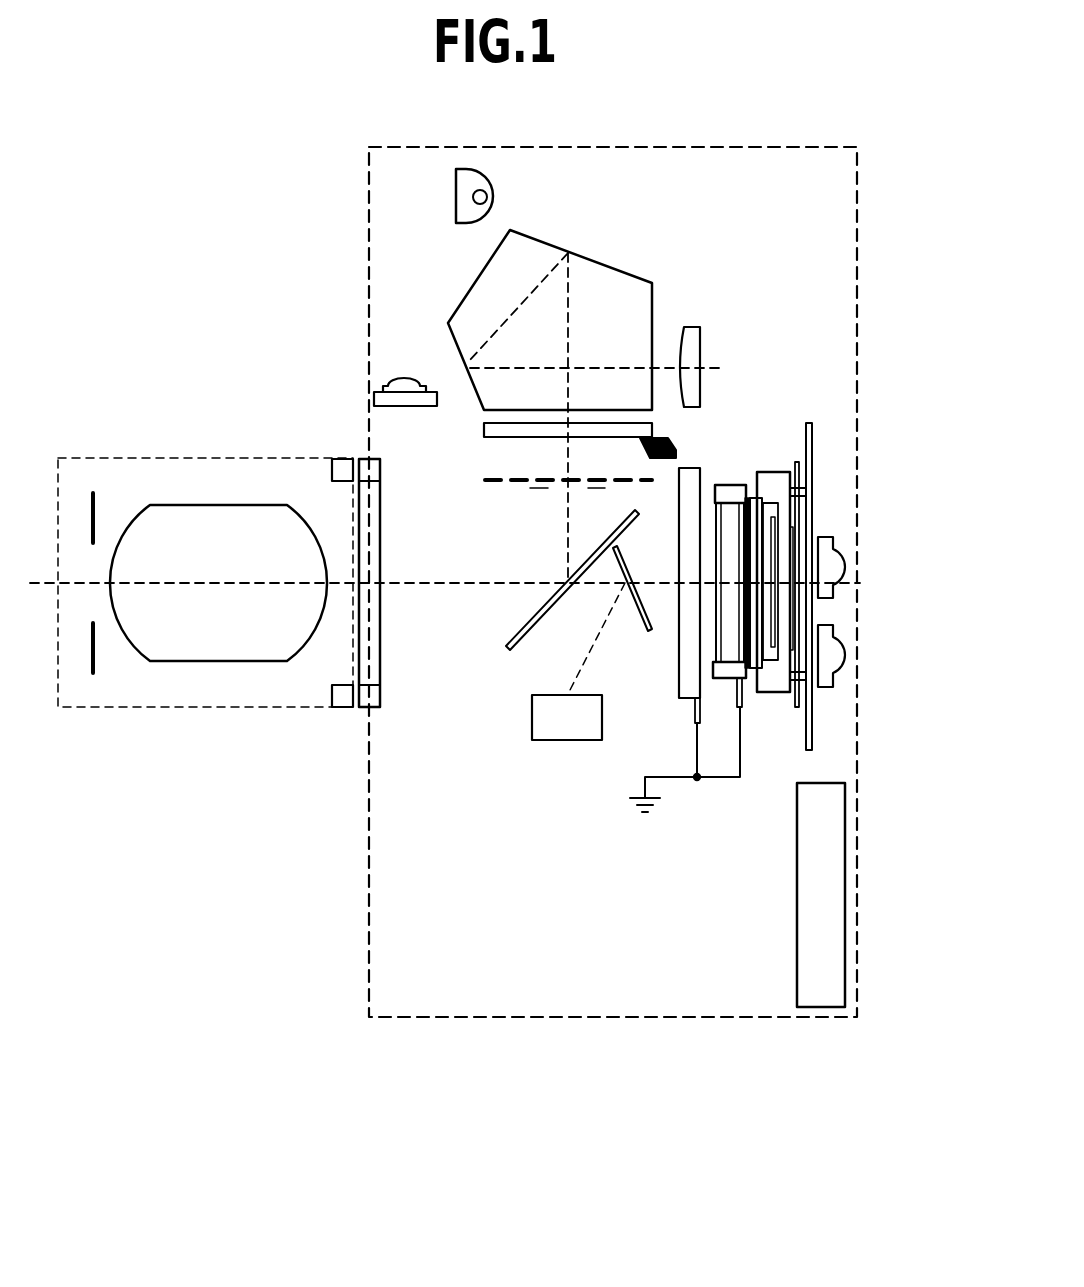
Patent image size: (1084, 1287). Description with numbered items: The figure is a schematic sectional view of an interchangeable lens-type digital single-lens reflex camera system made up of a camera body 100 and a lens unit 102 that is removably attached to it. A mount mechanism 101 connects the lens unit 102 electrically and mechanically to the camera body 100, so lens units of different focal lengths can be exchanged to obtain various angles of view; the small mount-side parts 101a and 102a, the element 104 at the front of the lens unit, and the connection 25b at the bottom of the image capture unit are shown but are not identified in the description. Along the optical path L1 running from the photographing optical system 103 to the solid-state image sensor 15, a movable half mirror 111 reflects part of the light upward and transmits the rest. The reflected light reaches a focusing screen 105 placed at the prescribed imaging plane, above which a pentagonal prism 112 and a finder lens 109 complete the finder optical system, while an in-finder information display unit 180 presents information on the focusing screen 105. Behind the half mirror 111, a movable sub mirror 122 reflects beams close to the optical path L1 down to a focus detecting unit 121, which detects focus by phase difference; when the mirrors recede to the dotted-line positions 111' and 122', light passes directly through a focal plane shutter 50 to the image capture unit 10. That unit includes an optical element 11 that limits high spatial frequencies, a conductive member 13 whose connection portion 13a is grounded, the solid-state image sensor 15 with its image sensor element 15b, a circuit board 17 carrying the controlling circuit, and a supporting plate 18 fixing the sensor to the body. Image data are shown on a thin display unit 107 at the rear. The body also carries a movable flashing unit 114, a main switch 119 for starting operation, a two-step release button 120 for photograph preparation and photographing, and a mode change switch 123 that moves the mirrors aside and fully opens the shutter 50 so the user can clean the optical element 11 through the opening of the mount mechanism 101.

The image capture unit 10 is at (788, 434).
The optical element 11 is at (706, 507).
The conductive member 13 is at (737, 490).
The connection portion 13a is at (742, 700).
The solid-state image sensor 15 is at (772, 471).
The image sensor element 15b is at (780, 530).
The circuit board 17 is at (797, 712).
The supporting plate 18 is at (813, 445).
The ground wiring 25b is at (692, 710).
The focal plane shutter 50 is at (678, 632).
The camera body 100 is at (632, 1019).
The mount mechanism 101 is at (372, 615).
The body-side mount contacts 101a is at (372, 702).
The lens unit 102 is at (163, 458).
The lens-side mount 102a is at (340, 702).
The photographing optical system 103 is at (190, 642).
The aperture stop 104 is at (97, 503).
The focusing screen 105 is at (484, 430).
The display unit 107 is at (828, 910).
The finder lens 109 is at (690, 327).
The half mirror 111 is at (553, 636).
The receded position of half mirror 111' is at (376, 445).
The pentagonal prism 112 is at (600, 285).
The movable flashing unit 114 is at (456, 197).
The main switch 119 is at (846, 655).
The release button 120 is at (403, 380).
The focus detecting unit 121 is at (560, 732).
The sub mirror 122 is at (771, 576).
The receded position of sub mirror 122' is at (557, 526).
The mode change switch 123 is at (846, 567).
The in-finder information display unit 180 is at (678, 452).
The optical path L1 is at (225, 582).